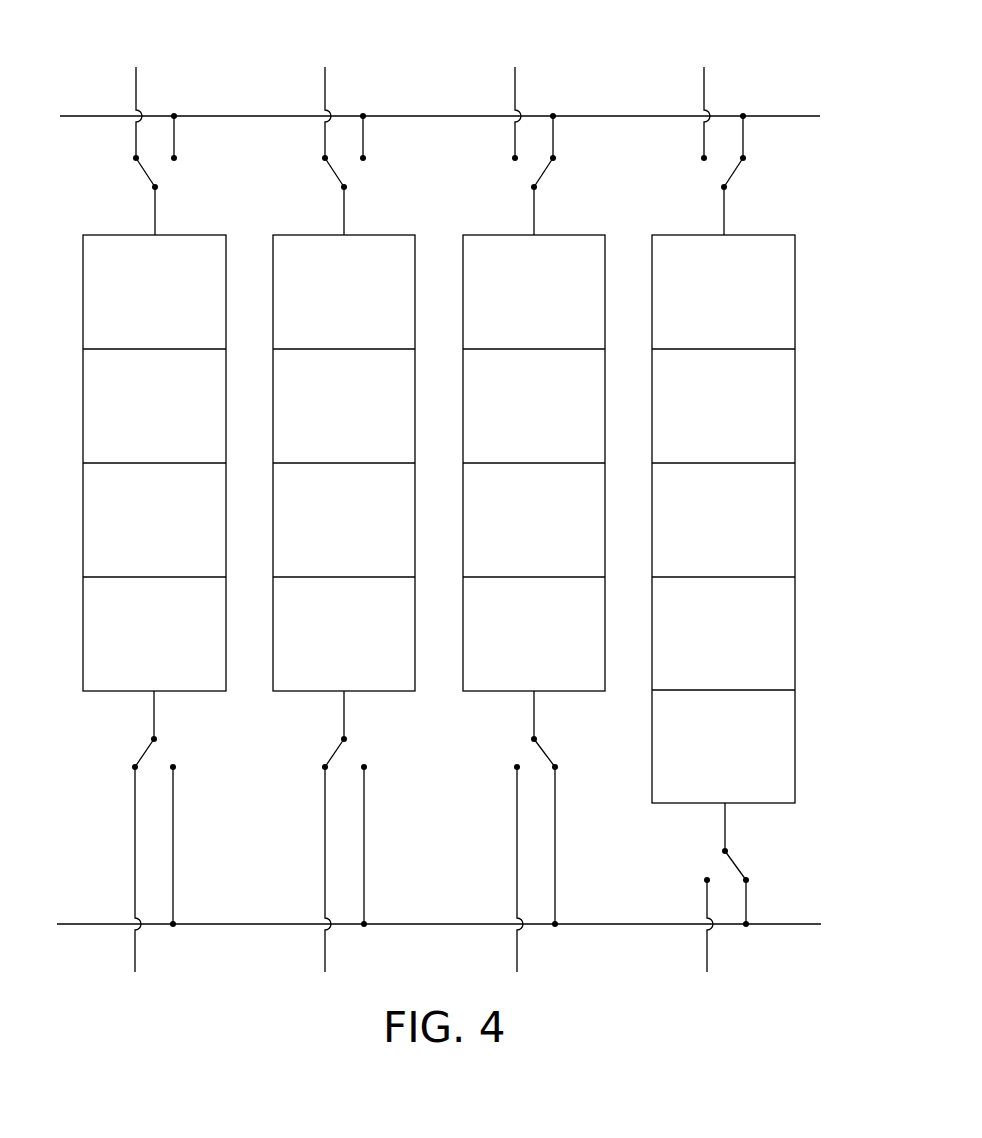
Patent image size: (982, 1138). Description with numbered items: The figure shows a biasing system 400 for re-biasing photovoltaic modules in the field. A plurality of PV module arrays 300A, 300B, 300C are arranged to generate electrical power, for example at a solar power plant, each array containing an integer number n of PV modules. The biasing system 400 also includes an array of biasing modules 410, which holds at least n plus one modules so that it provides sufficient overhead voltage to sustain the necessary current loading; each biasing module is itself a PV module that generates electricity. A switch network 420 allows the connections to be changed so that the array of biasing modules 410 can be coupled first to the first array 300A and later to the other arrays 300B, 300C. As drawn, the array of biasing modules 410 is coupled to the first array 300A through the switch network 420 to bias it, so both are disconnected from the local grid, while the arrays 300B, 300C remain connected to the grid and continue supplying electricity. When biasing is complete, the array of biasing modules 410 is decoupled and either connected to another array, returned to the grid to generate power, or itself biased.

The biasing system 400 is at (130, 32).
The switch network 420 is at (770, 115).
The third array of PV modules 300C is at (114, 227).
The second array of PV modules 300B is at (302, 227).
The first array of PV modules 300A is at (492, 227).
The array of biasing modules 410 is at (766, 226).